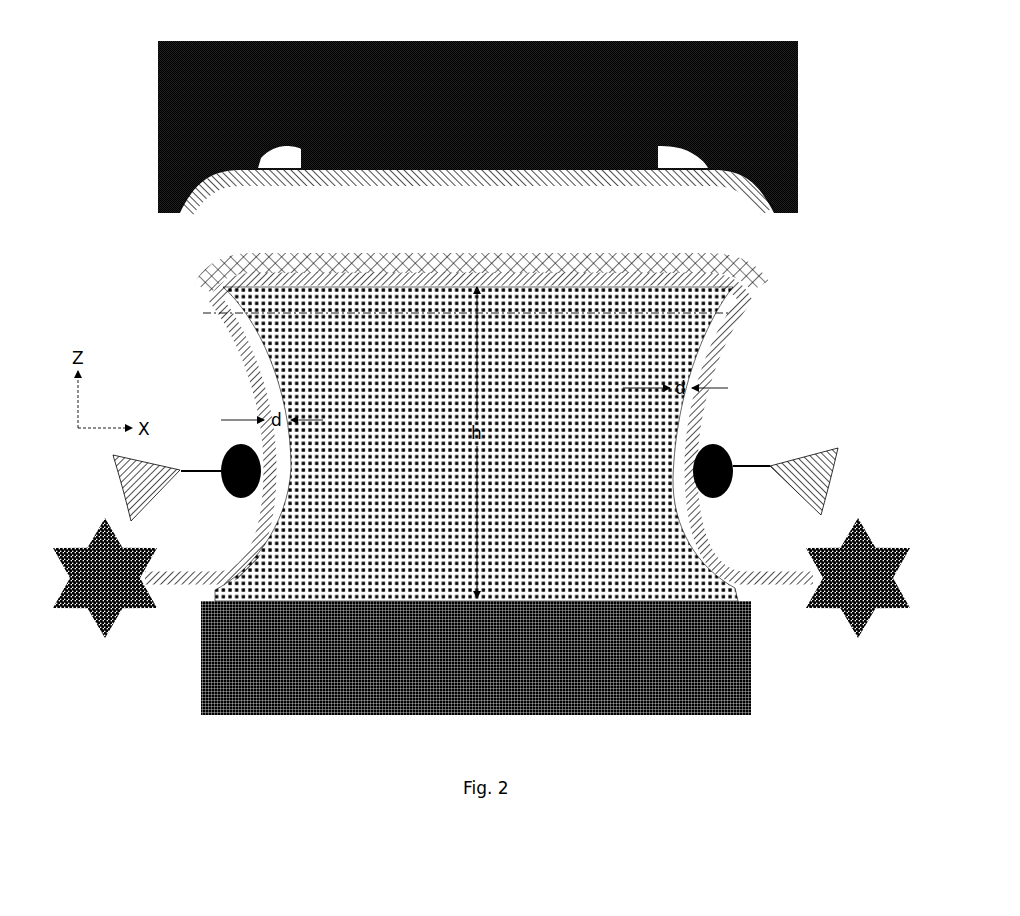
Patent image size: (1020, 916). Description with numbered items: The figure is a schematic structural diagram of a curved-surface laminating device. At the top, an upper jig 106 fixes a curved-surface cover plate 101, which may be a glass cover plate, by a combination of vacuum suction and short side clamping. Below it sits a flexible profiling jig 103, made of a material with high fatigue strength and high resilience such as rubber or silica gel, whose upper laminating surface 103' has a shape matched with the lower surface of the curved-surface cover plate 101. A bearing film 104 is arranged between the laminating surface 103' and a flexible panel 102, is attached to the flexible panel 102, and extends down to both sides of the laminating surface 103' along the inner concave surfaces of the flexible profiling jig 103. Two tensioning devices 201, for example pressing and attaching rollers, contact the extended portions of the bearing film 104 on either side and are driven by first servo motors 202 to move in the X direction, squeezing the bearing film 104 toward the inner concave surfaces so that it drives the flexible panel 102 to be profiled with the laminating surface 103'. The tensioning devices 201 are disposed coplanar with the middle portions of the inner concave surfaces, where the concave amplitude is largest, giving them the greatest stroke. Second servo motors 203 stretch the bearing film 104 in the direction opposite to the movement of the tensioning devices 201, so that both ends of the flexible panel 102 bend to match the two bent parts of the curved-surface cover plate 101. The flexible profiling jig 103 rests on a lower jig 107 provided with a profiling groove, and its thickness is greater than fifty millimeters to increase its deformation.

The upper jig 106 is at (790, 108).
The curved-surface cover plate 101 is at (728, 180).
The flexible panel 102 is at (757, 264).
The bearing film 104 is at (745, 285).
The flexible profiling jig 103 is at (525, 444).
The laminating surface 103' is at (419, 304).
The tensioning device 201 is at (706, 437).
The first servo motor 202 is at (833, 440).
The second servo motor 203 is at (887, 569).
The lower jig 107 is at (193, 650).